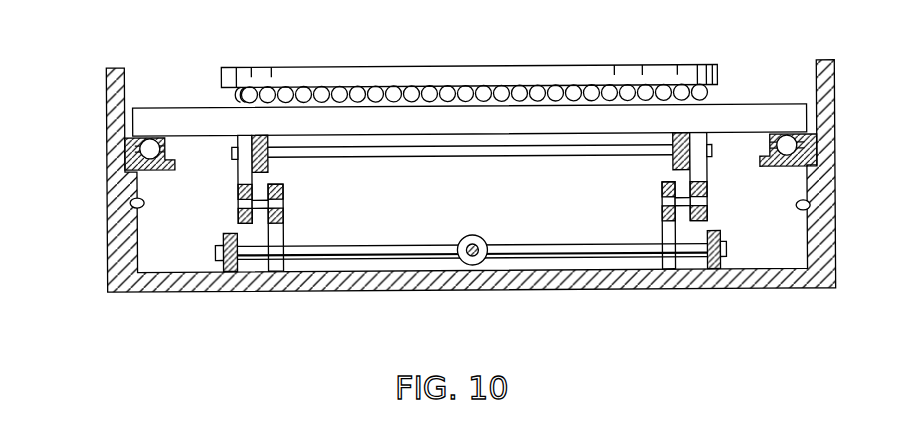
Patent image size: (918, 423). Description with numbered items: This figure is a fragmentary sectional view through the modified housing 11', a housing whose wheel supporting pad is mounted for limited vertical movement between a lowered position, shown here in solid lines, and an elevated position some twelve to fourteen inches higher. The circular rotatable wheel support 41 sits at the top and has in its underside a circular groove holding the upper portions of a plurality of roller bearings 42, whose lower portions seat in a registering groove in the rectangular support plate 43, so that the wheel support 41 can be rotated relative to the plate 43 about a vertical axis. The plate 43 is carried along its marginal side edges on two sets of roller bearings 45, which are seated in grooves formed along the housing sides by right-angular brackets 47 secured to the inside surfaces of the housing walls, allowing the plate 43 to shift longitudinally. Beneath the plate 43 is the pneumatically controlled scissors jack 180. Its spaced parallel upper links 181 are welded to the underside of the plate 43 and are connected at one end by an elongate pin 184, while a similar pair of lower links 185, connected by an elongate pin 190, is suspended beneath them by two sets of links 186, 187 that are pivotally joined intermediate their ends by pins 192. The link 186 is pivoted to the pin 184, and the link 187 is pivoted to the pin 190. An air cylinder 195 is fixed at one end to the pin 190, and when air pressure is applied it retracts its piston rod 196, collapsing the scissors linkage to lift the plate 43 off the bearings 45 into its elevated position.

The modified housing 11' is at (451, 173).
The rotatable wheel support 41 is at (500, 66).
The roller bearings 42 is at (707, 92).
The rectangular support plate 43 is at (172, 106).
The roller bearings 45 is at (140, 147).
The right-angular brackets 47 is at (131, 201).
The pneumatically controlled scissors jack 180 is at (186, 236).
The upper links 181 is at (283, 136).
The elongate pin 184 is at (448, 157).
The lower links 185 is at (218, 268).
The link 186 is at (233, 172).
The link 187 is at (283, 217).
The elongate pin 190 is at (517, 245).
The pins 192 is at (259, 190).
The air cylinder 195 is at (462, 238).
The piston rod 196 is at (468, 262).